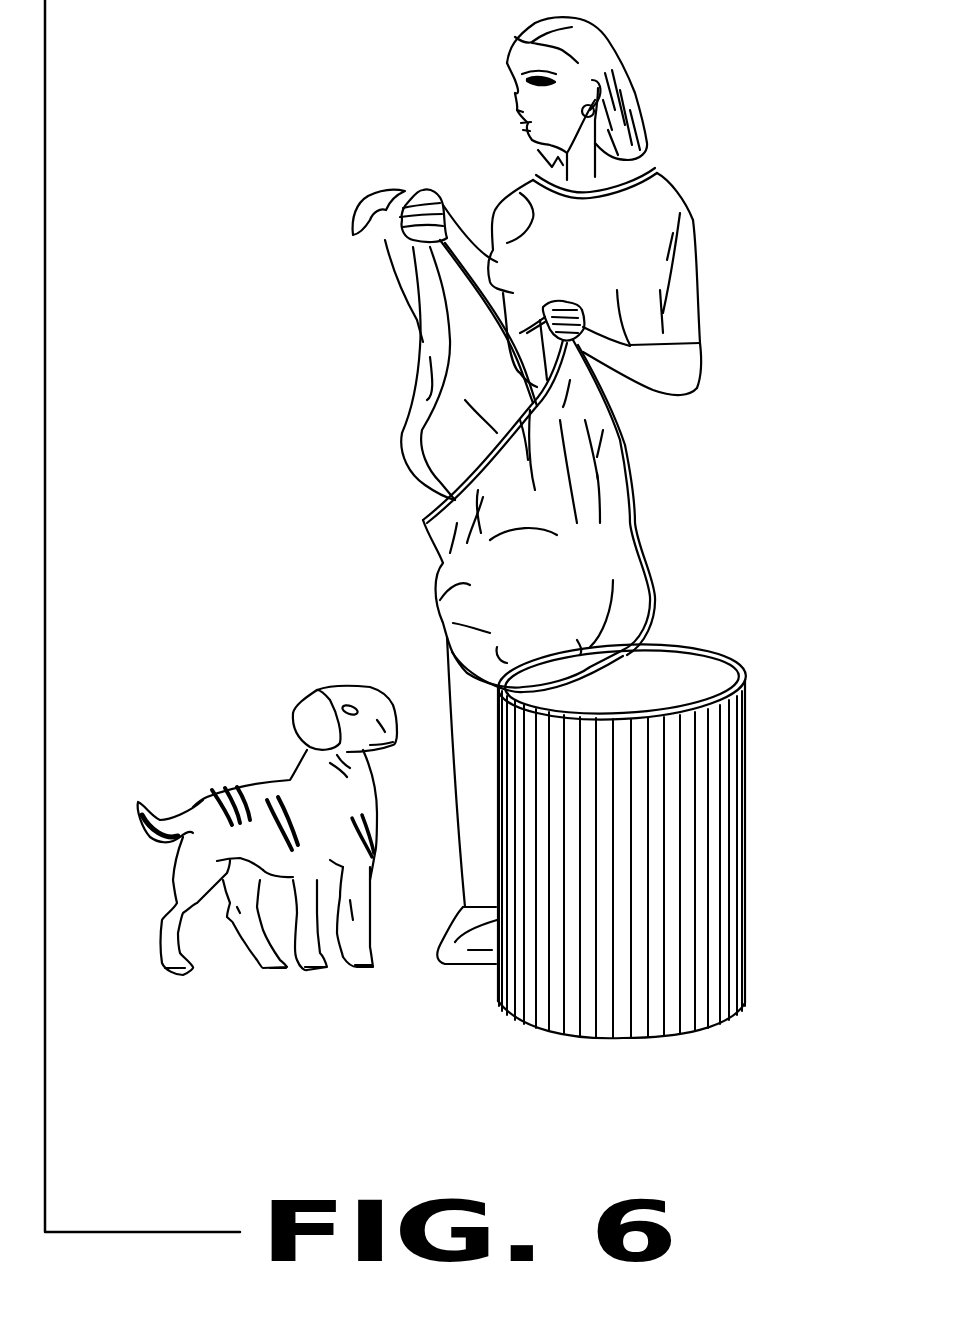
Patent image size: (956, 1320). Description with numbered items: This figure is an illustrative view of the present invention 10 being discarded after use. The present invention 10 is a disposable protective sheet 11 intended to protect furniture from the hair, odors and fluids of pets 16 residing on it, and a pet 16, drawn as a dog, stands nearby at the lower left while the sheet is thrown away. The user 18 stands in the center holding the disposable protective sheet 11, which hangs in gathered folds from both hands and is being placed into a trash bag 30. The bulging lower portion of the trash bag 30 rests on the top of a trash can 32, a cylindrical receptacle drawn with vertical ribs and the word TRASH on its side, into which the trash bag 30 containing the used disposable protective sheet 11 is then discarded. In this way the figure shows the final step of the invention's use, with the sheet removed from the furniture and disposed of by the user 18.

The present invention 10 is at (326, 176).
The disposable protective sheet 11 is at (423, 352).
The pet 16 is at (292, 775).
The user 18 is at (665, 190).
The trash bag 30 is at (462, 586).
The trash can 32 is at (668, 648).